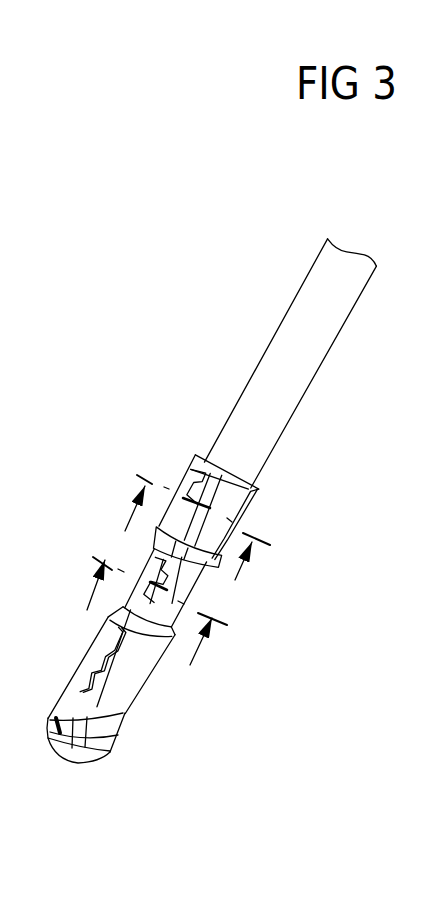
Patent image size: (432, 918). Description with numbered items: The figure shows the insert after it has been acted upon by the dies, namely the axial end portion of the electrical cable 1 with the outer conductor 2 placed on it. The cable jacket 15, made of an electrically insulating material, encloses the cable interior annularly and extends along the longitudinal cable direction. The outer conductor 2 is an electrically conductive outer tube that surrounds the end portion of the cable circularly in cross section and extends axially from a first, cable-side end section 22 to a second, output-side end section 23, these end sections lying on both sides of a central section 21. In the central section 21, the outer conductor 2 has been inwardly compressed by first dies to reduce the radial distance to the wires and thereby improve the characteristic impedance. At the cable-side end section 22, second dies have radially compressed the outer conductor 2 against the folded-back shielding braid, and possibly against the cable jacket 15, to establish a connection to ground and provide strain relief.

The electrical cable 1 is at (287, 247).
The cable jacket 15 is at (278, 363).
The cable-side end section 22 is at (246, 505).
The central section 21 is at (187, 590).
The outer conductor 2 is at (148, 682).
The output-side end section 23 is at (118, 733).